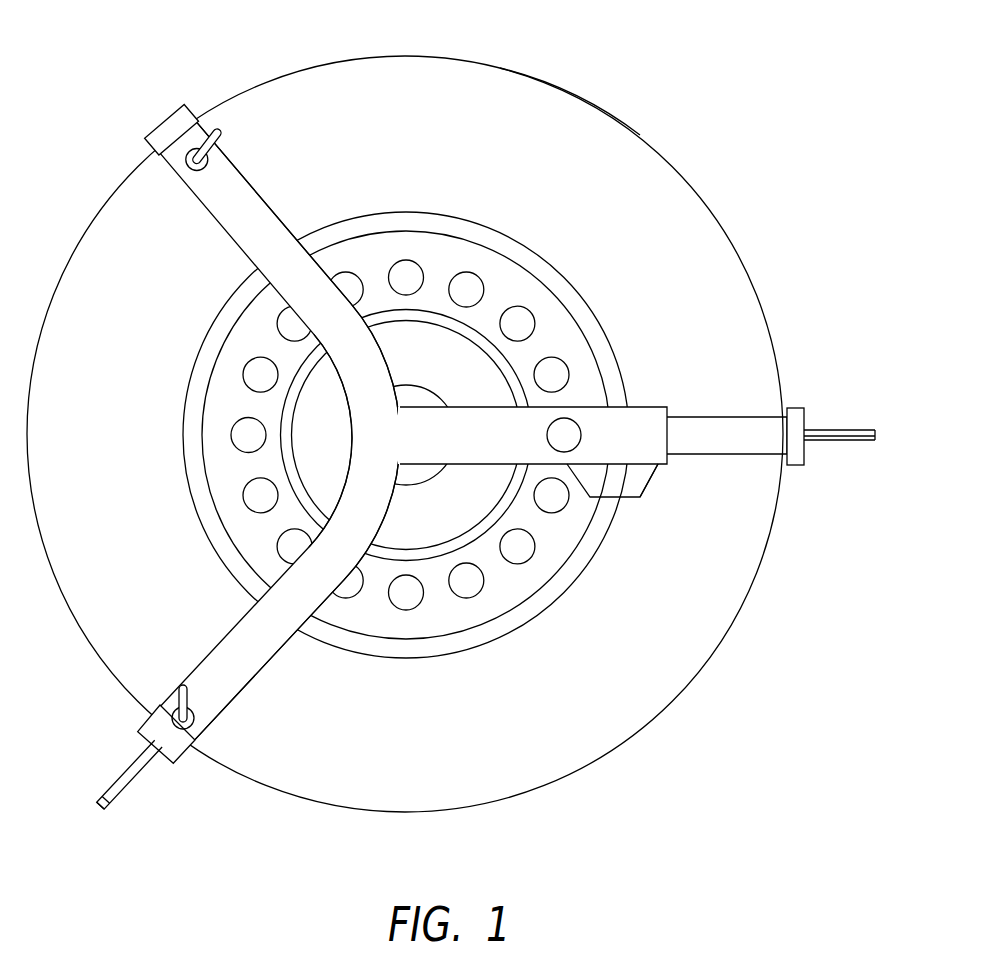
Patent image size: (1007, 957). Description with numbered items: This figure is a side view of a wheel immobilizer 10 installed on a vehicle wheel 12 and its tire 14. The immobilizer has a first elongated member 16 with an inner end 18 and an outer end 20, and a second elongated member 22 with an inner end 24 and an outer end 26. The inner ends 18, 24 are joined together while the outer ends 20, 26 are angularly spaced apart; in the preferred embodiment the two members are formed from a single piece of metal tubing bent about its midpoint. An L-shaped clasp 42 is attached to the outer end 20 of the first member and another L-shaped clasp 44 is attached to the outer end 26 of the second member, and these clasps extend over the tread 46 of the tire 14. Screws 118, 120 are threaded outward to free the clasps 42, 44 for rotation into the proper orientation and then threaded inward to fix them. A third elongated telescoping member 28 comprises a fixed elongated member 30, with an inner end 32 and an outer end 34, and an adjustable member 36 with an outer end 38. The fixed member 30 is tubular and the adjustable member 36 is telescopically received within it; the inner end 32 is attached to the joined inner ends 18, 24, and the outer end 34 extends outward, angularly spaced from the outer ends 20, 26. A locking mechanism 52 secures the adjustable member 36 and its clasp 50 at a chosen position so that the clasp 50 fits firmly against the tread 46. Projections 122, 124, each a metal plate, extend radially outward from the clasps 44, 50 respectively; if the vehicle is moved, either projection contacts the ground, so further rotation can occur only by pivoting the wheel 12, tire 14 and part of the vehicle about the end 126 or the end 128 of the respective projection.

The wheel immobilizer 10 is at (177, 830).
The wheel 12 is at (705, 158).
The tire 14 is at (454, 36).
The first elongated member 16 is at (303, 172).
The inner end of first elongated member 18 is at (370, 392).
The outer end of first elongated member 20 is at (163, 206).
The second elongated member 22 is at (292, 678).
The inner end of second elongated member 24 is at (370, 473).
The outer end of second elongated member 26 is at (235, 742).
The third elongated telescoping member 28 is at (690, 512).
The fixed elongated member 30 is at (648, 406).
The inner end of fixed member 32 is at (445, 672).
The outer end of fixed member 34 is at (667, 434).
The adjustable member 36 is at (715, 416).
The outer end of adjustable member 38 is at (787, 432).
The L-shaped clasp 42 is at (150, 124).
The L-shaped clasp 44 is at (138, 730).
The tread 46 is at (612, 73).
The clasp 50 is at (797, 407).
The locking mechanism 52 is at (638, 532).
The screw 118 is at (215, 131).
The screw 120 is at (180, 688).
The projection 122 is at (125, 783).
The projection 124 is at (839, 478).
The end of projection 126 is at (70, 840).
The end of projection 128 is at (874, 430).